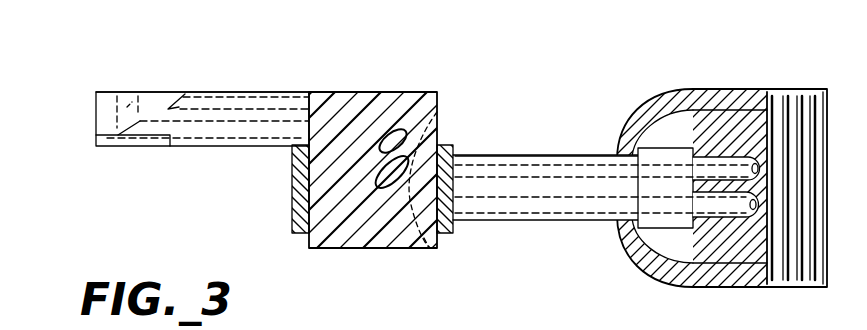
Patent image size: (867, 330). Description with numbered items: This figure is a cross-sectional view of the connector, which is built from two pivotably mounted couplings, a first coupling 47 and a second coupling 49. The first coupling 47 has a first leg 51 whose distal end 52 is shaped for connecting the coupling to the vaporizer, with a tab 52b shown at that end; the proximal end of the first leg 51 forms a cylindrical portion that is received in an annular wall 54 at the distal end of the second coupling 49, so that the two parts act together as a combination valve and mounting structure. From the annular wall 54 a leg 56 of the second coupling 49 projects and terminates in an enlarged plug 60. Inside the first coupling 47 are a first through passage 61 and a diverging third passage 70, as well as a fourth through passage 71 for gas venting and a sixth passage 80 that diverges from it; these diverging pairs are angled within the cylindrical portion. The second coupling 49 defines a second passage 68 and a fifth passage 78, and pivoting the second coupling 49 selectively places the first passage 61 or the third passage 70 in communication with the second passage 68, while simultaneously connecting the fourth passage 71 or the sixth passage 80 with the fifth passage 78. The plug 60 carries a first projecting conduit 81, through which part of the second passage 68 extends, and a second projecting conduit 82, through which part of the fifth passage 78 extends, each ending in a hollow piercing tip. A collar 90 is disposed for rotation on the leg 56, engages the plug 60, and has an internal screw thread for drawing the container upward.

The first coupling 47 is at (194, 78).
The second coupling 49 is at (515, 140).
The first leg 51 is at (210, 92).
The distal end 52 is at (230, 162).
The tab 52b is at (97, 146).
The annular wall 54 is at (290, 217).
The leg 56 is at (490, 155).
The plug 60 is at (653, 147).
The first through passage 61 is at (127, 107).
The second passage 68 is at (503, 207).
The third passage 70 is at (430, 248).
The fourth through passage 71 is at (177, 92).
The fifth passage 78 is at (552, 164).
The sixth passage 80 is at (437, 112).
The first projecting conduit 81 is at (730, 217).
The second projecting conduit 82 is at (707, 157).
The collar 90 is at (718, 80).